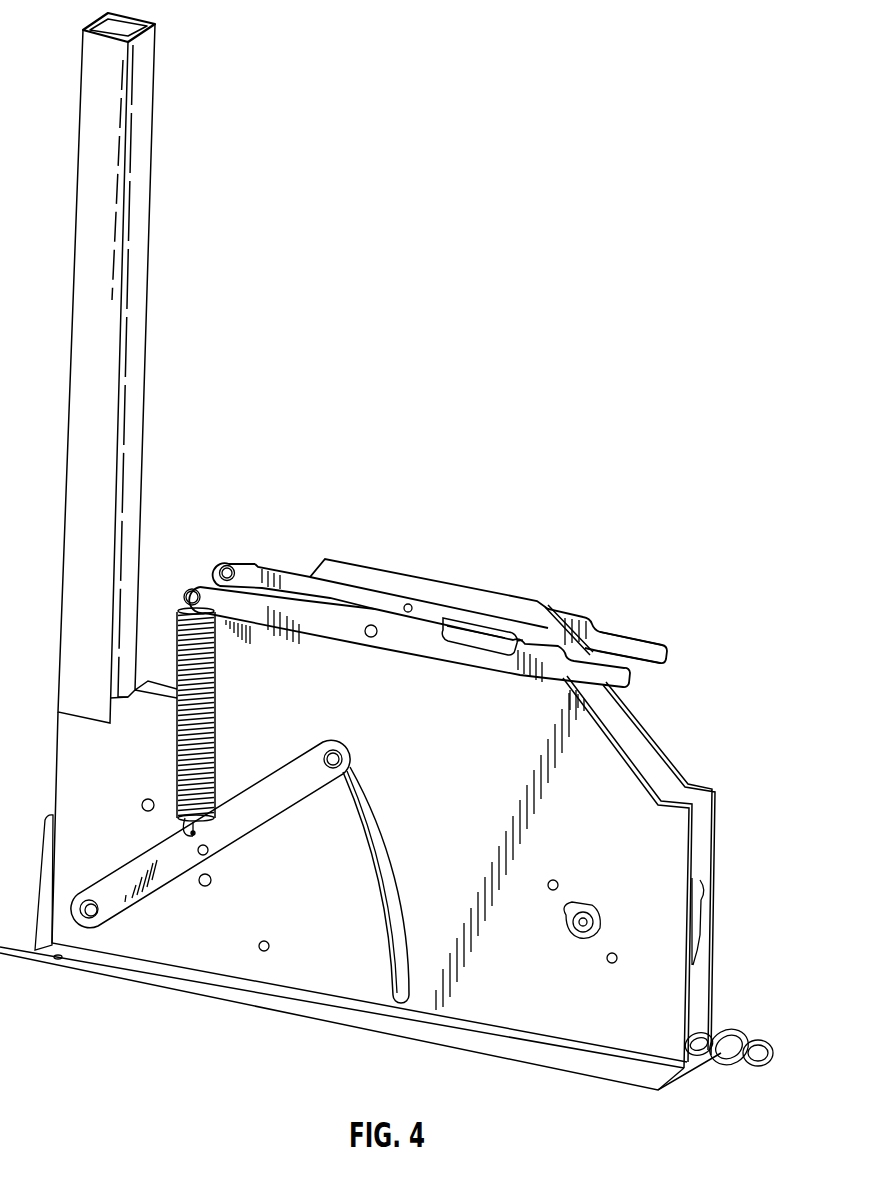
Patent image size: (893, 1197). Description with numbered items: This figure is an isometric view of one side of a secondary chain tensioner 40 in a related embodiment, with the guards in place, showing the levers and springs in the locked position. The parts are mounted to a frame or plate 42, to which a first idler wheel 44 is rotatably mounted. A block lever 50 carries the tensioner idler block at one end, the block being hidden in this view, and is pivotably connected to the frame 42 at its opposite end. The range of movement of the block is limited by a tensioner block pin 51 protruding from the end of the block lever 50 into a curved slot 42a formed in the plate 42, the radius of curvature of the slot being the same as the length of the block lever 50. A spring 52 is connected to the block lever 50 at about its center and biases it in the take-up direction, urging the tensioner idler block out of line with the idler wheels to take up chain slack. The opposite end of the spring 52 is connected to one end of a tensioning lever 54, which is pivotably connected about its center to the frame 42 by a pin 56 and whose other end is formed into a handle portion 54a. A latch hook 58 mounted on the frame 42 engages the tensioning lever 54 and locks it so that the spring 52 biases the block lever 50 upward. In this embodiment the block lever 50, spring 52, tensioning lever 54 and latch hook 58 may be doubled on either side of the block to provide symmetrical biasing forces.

The secondary chain tensioner 40 is at (602, 800).
The frame or plate 42 is at (690, 830).
The curved slot 42a is at (400, 963).
The first idler wheel 44 is at (705, 922).
The block lever 50 is at (105, 902).
The tensioner block pin 51 is at (345, 762).
The spring 52 is at (176, 612).
The tensioning lever 54 is at (307, 570).
The handle portion 54a is at (658, 640).
The pin 56 is at (372, 626).
The latch hook 58 is at (487, 603).